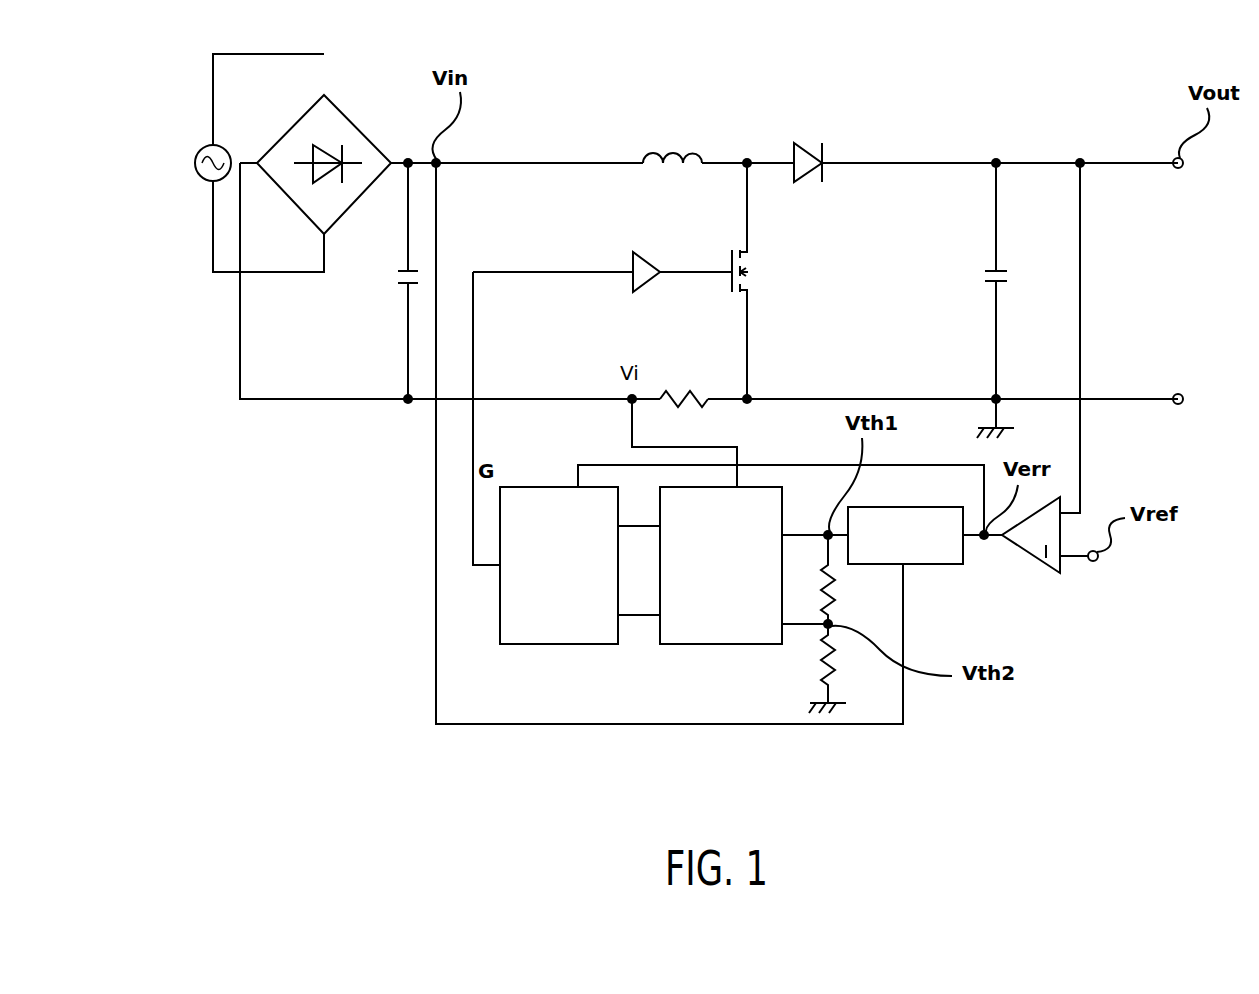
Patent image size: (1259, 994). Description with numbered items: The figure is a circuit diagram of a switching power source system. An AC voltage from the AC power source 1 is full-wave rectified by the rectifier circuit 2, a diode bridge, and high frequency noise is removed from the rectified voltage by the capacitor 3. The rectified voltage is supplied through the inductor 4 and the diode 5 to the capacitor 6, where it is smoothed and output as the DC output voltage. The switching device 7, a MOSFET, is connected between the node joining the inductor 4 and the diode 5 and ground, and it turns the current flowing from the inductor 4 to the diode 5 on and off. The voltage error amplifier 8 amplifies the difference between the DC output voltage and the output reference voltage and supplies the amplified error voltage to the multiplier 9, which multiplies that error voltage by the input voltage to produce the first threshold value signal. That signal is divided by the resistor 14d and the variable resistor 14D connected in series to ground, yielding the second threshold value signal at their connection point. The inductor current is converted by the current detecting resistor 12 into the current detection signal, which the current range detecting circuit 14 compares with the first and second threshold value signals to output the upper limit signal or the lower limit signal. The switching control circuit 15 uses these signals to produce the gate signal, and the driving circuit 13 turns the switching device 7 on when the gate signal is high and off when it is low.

The AC power source 1 is at (200, 178).
The rectifier circuit 2 is at (336, 125).
The capacitor 3 is at (405, 285).
The inductor 4 is at (652, 140).
The diode 5 is at (808, 150).
The capacitor 6 is at (990, 270).
The switching device 7 is at (745, 256).
The voltage error amplifier 8 is at (1048, 565).
The multiplier 9 is at (948, 555).
The current detecting resistor 12 is at (712, 405).
The driving circuit 13 is at (648, 268).
The current range detecting circuit 14 is at (713, 620).
The resistor 14d is at (811, 579).
The variable resistor 14D is at (812, 668).
The switching control circuit 15 is at (560, 622).